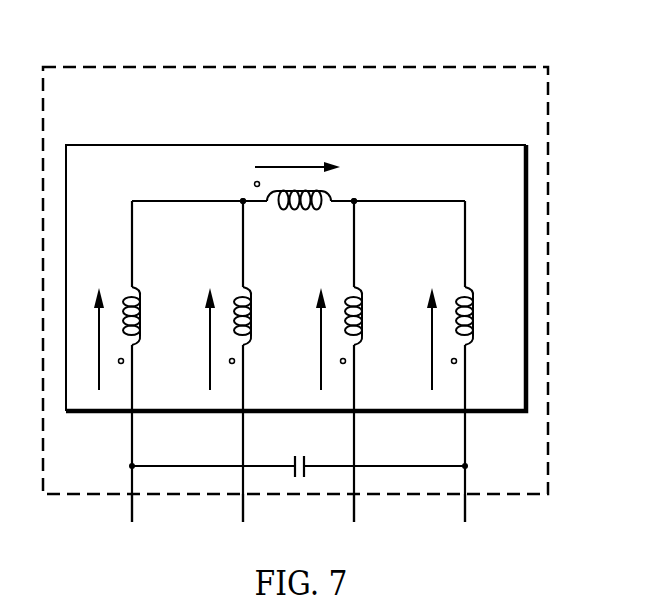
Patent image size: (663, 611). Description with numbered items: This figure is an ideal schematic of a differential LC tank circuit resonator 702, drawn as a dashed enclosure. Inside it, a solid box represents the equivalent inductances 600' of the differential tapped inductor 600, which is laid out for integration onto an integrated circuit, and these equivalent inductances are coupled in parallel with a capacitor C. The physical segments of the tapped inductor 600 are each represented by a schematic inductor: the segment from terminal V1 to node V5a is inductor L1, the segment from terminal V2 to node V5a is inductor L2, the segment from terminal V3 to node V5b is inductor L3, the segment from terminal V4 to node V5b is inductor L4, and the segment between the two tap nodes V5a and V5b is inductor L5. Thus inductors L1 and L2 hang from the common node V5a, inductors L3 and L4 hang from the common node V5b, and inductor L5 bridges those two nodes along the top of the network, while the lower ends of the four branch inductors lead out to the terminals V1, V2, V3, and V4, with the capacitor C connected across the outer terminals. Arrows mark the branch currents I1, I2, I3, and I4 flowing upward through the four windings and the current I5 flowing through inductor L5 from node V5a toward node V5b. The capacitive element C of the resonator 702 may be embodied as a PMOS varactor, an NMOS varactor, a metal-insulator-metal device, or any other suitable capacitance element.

The differential LC tank circuit resonator 702 is at (175, 66).
The equivalent inductances 600' is at (296, 243).
The differential tapped inductor 600 is at (296, 243).
The capacitor C is at (300, 452).
The inductor L1 is at (144, 325).
The inductor L2 is at (255, 325).
The inductor L3 is at (366, 325).
The inductor L4 is at (477, 325).
The inductor L5 is at (293, 208).
The current through first winding I1 is at (99, 317).
The current through second winding I2 is at (210, 317).
The current through third winding I3 is at (321, 317).
The current through fourth winding I4 is at (432, 317).
The current through fifth winding I5 is at (314, 168).
The terminal V1 is at (132, 521).
The terminal V2 is at (243, 521).
The terminal V3 is at (354, 521).
The terminal V4 is at (465, 521).
The node V5a is at (210, 188).
The node V5b is at (389, 188).